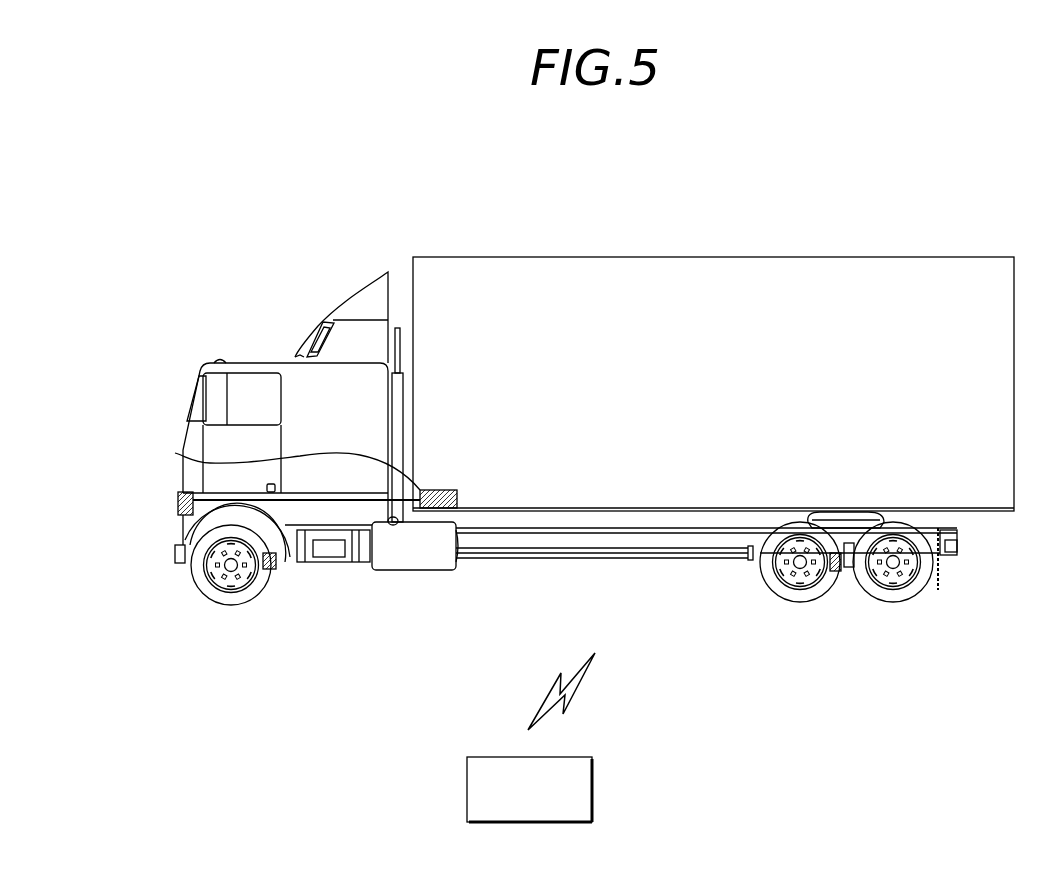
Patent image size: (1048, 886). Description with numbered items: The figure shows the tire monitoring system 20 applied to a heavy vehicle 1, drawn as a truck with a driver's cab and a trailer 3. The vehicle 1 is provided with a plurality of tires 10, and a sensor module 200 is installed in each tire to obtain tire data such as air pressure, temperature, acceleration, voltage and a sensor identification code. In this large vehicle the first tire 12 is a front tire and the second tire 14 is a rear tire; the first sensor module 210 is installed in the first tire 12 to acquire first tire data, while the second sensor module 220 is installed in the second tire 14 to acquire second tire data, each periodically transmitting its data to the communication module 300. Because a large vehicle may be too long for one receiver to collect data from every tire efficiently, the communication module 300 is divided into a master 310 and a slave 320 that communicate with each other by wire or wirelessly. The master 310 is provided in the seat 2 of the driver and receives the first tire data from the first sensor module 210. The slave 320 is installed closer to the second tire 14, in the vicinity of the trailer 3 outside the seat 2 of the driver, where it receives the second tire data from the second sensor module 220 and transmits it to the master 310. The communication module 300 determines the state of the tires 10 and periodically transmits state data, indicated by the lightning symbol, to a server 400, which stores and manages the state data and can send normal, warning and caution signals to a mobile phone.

The vehicle 1 is at (545, 234).
The seat of the driver 2 is at (297, 382).
The trailer 3 is at (627, 262).
The tires 10 is at (562, 595).
The first tire 12 is at (232, 604).
The second tire 14 is at (800, 603).
The tire monitoring system 20 is at (652, 173).
The sensor module 200 is at (601, 610).
The first sensor module 210 is at (277, 566).
The second sensor module 220 is at (842, 567).
The communication module 300 is at (118, 428).
The master 310 is at (178, 500).
The slave 320 is at (175, 453).
The server 400 is at (467, 788).